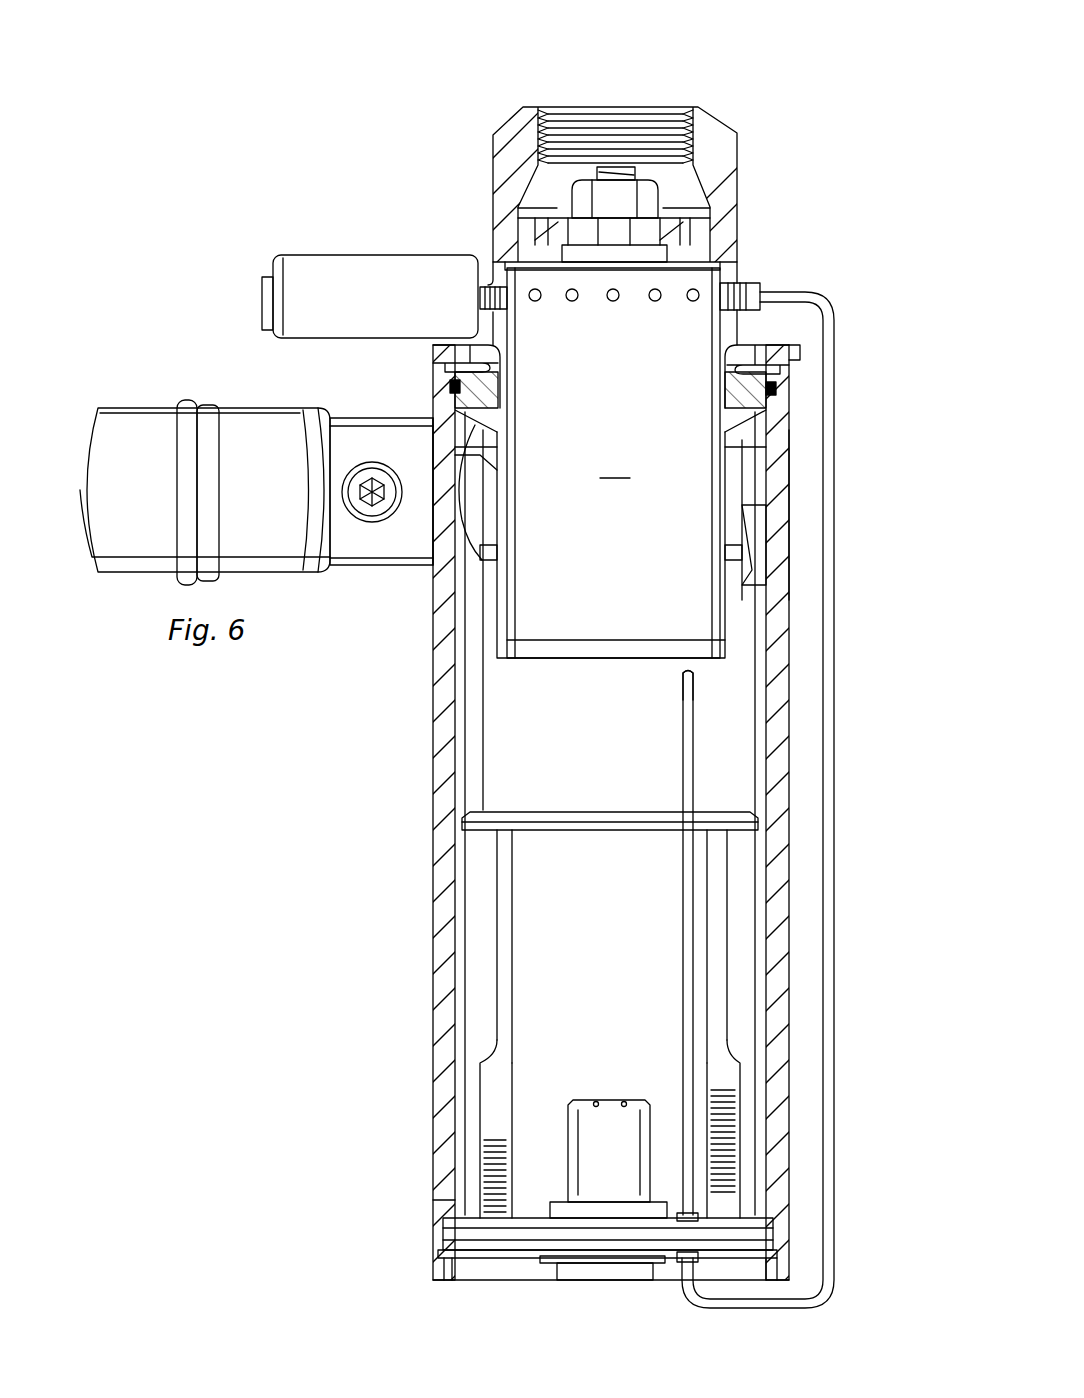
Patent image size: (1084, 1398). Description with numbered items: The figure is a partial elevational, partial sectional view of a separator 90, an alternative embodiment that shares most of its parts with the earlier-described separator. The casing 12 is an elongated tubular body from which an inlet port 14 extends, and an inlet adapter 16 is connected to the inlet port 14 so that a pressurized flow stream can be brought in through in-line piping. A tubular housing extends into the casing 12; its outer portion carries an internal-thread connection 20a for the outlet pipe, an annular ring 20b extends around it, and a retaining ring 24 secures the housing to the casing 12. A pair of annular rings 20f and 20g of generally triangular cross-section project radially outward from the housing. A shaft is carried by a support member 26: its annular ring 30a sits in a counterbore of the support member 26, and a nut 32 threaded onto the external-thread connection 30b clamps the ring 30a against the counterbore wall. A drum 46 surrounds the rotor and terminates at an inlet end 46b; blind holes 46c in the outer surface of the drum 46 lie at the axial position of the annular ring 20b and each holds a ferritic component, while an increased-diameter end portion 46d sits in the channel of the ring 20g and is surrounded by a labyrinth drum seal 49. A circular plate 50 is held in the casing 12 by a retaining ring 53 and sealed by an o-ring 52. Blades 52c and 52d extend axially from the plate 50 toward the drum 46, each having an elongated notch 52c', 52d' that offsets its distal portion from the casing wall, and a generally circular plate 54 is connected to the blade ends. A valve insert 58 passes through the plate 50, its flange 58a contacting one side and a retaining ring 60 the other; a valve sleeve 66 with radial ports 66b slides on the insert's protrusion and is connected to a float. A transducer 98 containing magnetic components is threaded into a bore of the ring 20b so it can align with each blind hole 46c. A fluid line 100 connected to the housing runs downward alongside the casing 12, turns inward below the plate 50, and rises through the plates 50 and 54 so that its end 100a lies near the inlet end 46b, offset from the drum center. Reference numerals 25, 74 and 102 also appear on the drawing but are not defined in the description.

The separator 90 is at (365, 88).
The casing 12 is at (428, 905).
The inlet port 14 is at (372, 418).
The inlet adapter 16 is at (160, 408).
The internal-thread connection 20a is at (555, 110).
The annular ring 20b is at (482, 250).
The annular ring 20f is at (470, 430).
The annular ring 20g is at (487, 535).
The retaining ring 24 is at (800, 352).
The housing wall 25 is at (790, 458).
The support member 26 is at (557, 208).
The annular ring 30a is at (710, 242).
The external-thread connection 30b is at (617, 172).
The nut 32 is at (665, 192).
The drum 46 is at (613, 463).
The inlet end 46b is at (540, 660).
The blind holes 46c is at (572, 301).
The increased-diameter end portion 46d is at (730, 625).
The drum seal 49 is at (760, 578).
The circular plate 50 is at (450, 1205).
The o-ring 52 is at (522, 1237).
The blade 52c is at (812, 1129).
The elongated notch 52c' is at (816, 946).
The blade 52d is at (430, 1129).
The elongated notch 52d' is at (431, 946).
The retaining ring 53 is at (462, 1256).
The circular plate 54 is at (660, 832).
The valve insert 58 is at (612, 1272).
The flange 58a is at (560, 1204).
The retaining ring 60 is at (545, 1263).
The valve sleeve 66 is at (612, 1100).
The ports 66b is at (590, 1103).
The set screw 74 is at (343, 485).
The transducer 98 is at (330, 252).
The fluid line 100 is at (682, 745).
The end 100a is at (686, 680).
The tube fitting 102 is at (760, 280).